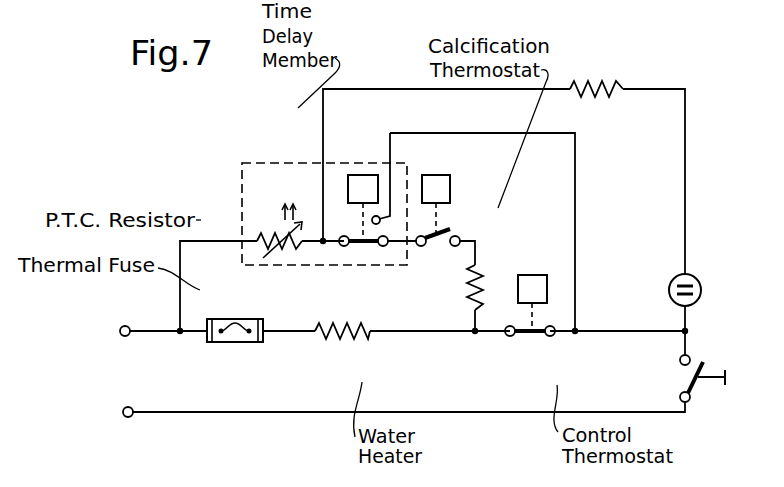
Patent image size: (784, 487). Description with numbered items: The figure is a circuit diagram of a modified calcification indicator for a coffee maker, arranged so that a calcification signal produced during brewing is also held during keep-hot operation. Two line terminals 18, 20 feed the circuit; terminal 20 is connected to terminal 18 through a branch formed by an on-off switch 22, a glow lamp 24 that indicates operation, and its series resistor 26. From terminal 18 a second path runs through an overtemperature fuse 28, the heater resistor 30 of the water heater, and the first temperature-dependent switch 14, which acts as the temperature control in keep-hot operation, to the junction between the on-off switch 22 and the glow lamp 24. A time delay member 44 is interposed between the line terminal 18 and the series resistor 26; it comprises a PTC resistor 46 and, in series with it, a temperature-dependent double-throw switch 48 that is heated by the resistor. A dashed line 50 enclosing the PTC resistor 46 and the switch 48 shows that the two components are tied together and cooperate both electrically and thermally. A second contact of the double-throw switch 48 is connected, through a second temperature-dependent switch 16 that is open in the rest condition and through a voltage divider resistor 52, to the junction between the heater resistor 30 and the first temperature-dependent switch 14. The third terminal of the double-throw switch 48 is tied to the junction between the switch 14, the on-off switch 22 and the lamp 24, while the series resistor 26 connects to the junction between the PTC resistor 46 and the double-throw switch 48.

The temperature-dependent switch 14 is at (541, 335).
The second temperature-dependent switch 16 is at (438, 213).
The line terminal 18 is at (120, 331).
The line terminal 20 is at (123, 414).
The on-off switch 22 is at (700, 386).
The glow lamp 24 is at (700, 282).
The series resistor 26 is at (594, 87).
The overtemperature fuse 28 is at (235, 318).
The heater resistor 30 is at (348, 343).
The time delay member 44 is at (280, 157).
The PTC resistor 46 is at (257, 240).
The double-throw switch 48 is at (375, 244).
The dashed line 50 is at (234, 162).
The voltage divider resistor 52 is at (486, 289).